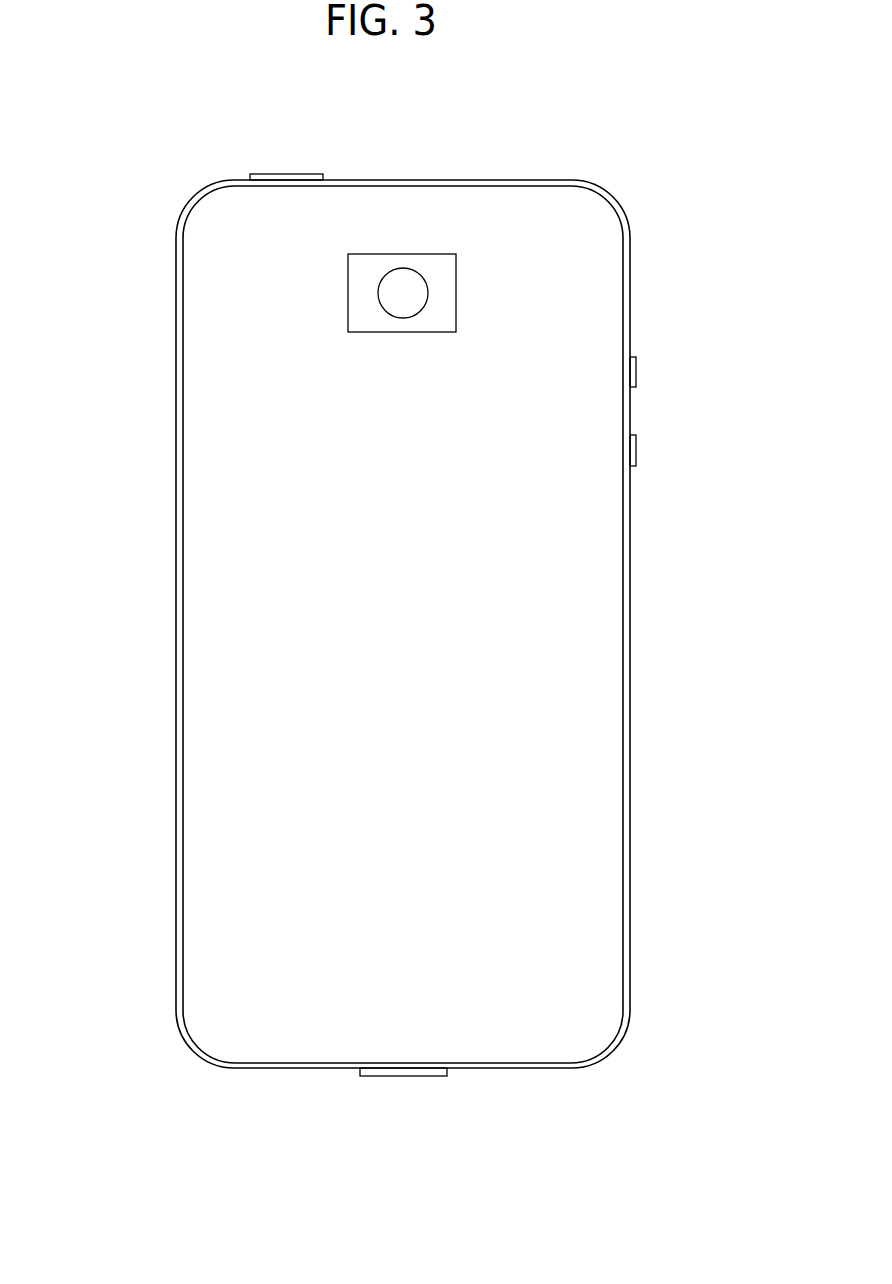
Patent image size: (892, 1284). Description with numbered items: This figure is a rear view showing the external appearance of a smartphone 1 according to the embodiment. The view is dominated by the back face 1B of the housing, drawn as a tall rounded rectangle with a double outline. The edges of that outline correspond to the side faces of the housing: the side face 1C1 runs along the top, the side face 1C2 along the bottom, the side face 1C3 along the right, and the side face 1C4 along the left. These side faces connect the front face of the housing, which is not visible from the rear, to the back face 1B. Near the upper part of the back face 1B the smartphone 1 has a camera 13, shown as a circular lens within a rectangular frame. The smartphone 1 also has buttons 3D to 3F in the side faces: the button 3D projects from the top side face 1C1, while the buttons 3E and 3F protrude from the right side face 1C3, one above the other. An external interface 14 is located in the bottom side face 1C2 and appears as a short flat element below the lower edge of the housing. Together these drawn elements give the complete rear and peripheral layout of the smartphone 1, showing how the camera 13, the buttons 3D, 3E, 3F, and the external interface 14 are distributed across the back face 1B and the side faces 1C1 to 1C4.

The smartphone 1 is at (662, 223).
The back face 1B is at (205, 495).
The side face 1C1 is at (505, 180).
The side face 1C2 is at (513, 1070).
The side face 1C3 is at (630, 722).
The side face 1C4 is at (176, 648).
The button 3D is at (284, 174).
The button 3E is at (636, 372).
The button 3F is at (636, 450).
The camera 13 is at (405, 283).
The external interface 14 is at (400, 1078).